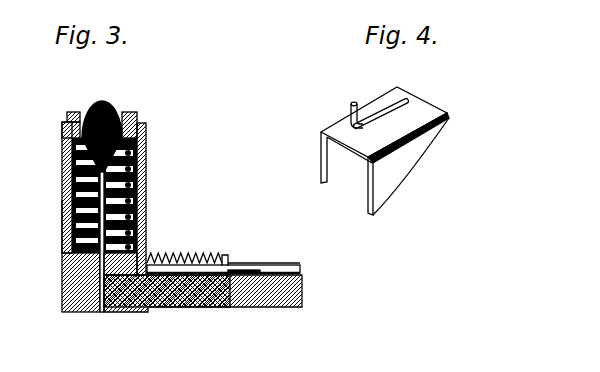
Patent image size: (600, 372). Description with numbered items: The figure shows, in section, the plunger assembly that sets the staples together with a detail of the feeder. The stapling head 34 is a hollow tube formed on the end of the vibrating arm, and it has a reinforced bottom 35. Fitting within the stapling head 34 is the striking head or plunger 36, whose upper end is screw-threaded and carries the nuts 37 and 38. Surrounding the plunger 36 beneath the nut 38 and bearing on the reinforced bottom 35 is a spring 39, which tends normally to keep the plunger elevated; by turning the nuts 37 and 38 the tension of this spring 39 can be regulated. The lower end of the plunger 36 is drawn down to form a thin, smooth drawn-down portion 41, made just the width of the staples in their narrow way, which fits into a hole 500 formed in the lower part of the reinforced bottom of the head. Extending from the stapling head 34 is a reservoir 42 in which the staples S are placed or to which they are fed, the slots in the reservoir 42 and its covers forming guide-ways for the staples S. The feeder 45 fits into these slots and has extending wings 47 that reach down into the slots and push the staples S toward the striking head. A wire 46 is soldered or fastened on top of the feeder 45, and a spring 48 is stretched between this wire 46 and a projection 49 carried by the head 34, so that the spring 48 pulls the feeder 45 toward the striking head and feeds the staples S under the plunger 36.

In FIG. 3, the stapling head 34 is at (63, 190).
In FIG. 3, the reinforced bottom 35 is at (72, 298).
In FIG. 3, the striking head or plunger 36 is at (117, 105).
In FIG. 3, the nut 37 is at (137, 116).
In FIG. 3, the nut 38 is at (146, 137).
In FIG. 3, the spring 39 is at (63, 213).
In FIG. 3, the drawn-down portion 41 is at (67, 240).
In FIG. 3, the reservoir 42 is at (280, 304).
In FIG. 3, the feeder 45 is at (260, 270).
In FIG. 4, the feeder 45 is at (422, 113).
In FIG. 3, the wire 46 is at (238, 273).
In FIG. 4, the wire 46 is at (352, 103).
In FIG. 4, the wings 47 is at (348, 152).
In FIG. 3, the spring 48 is at (185, 263).
In FIG. 3, the projection 49 is at (147, 254).
In FIG. 3, the hole 500 is at (103, 312).
In FIG. 3, the staples S is at (173, 297).